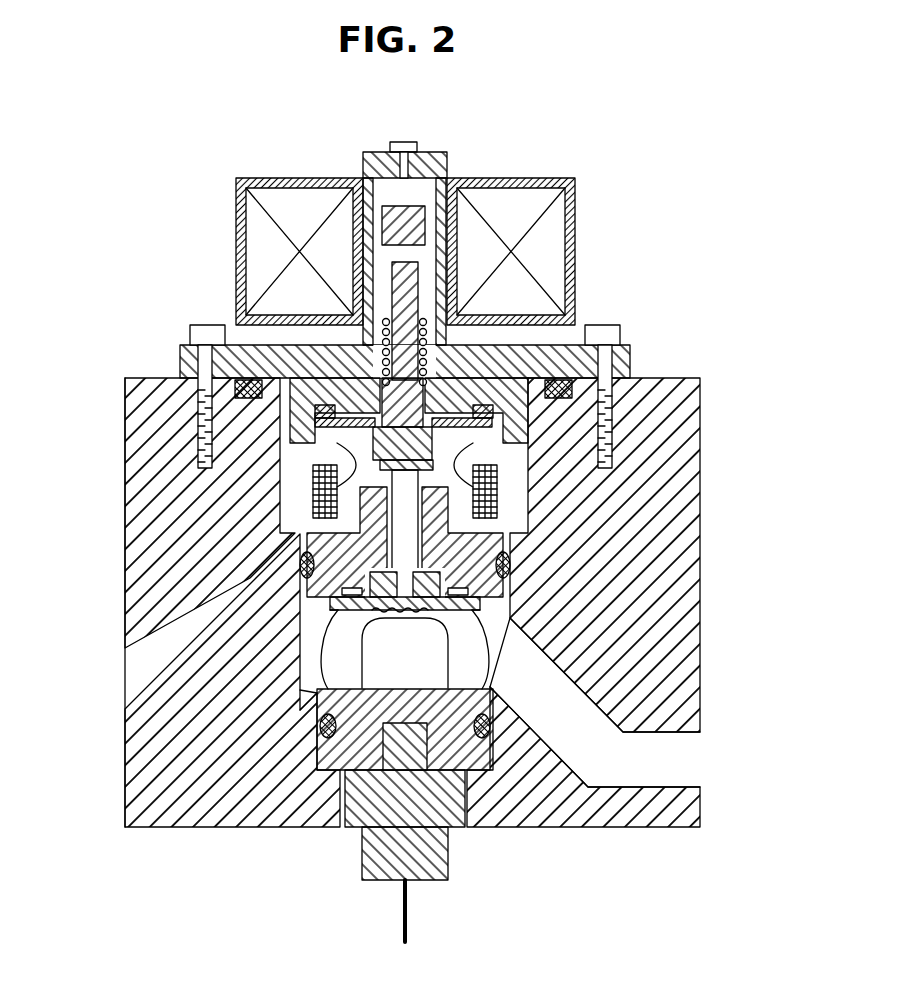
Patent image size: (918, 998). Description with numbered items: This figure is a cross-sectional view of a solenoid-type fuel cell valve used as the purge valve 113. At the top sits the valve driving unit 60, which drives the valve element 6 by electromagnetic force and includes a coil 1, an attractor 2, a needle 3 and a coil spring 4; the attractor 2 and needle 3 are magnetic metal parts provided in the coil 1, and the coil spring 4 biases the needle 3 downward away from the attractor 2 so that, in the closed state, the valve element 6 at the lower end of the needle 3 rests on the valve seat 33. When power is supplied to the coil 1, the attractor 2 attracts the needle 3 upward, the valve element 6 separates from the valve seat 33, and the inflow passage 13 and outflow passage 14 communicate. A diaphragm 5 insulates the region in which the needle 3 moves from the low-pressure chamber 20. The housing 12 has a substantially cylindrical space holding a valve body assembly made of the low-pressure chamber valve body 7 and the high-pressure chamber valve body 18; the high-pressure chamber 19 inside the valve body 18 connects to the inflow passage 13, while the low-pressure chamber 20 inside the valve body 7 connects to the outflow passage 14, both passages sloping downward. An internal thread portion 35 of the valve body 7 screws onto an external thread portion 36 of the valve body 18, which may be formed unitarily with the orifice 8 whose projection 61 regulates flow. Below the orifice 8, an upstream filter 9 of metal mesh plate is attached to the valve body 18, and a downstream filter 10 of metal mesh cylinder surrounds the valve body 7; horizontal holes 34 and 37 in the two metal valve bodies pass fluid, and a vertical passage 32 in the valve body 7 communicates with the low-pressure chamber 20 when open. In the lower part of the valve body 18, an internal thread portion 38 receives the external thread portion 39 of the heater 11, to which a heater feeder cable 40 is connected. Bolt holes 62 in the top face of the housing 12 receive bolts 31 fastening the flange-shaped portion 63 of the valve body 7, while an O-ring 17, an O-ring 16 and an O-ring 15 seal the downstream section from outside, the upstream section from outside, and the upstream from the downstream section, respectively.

The coil 1 is at (508, 272).
The attractor 2 is at (447, 185).
The needle 3 is at (412, 232).
The coil spring 4 is at (402, 316).
The diaphragm 5 is at (190, 360).
The valve element 6 is at (494, 483).
The low-pressure chamber valve body 7 is at (553, 340).
The orifice 8 is at (485, 473).
The upstream filter 9 is at (380, 655).
The downstream filter 10 is at (335, 515).
The heater 11 is at (435, 855).
The housing 12 is at (655, 530).
The inflow passage 13 is at (680, 750).
The outflow passage 14 is at (155, 655).
The O-ring 15 is at (305, 572).
The O-ring 16 is at (540, 770).
The O-ring 17 is at (245, 390).
The high-pressure chamber valve body 18 is at (330, 770).
The high-pressure chamber 19 is at (300, 700).
The low-pressure chamber 20 is at (385, 428).
The bolts 31 is at (205, 333).
The vertical passage 32 is at (395, 535).
The valve seat 33 is at (310, 485).
The horizontal holes 34 is at (318, 497).
The internal thread portion 35 is at (452, 648).
The external thread portion 36 is at (405, 612).
The horizontal holes 37 is at (470, 670).
The internal thread portion 38 is at (390, 770).
The external thread portion 39 is at (350, 830).
The heater feeder cable 40 is at (410, 912).
The valve driving unit 60 is at (437, 148).
The projection 61 is at (345, 615).
The bolt holes 62 is at (625, 425).
The flange-shaped portion 63 is at (622, 340).
The purge valve 113 is at (172, 93).